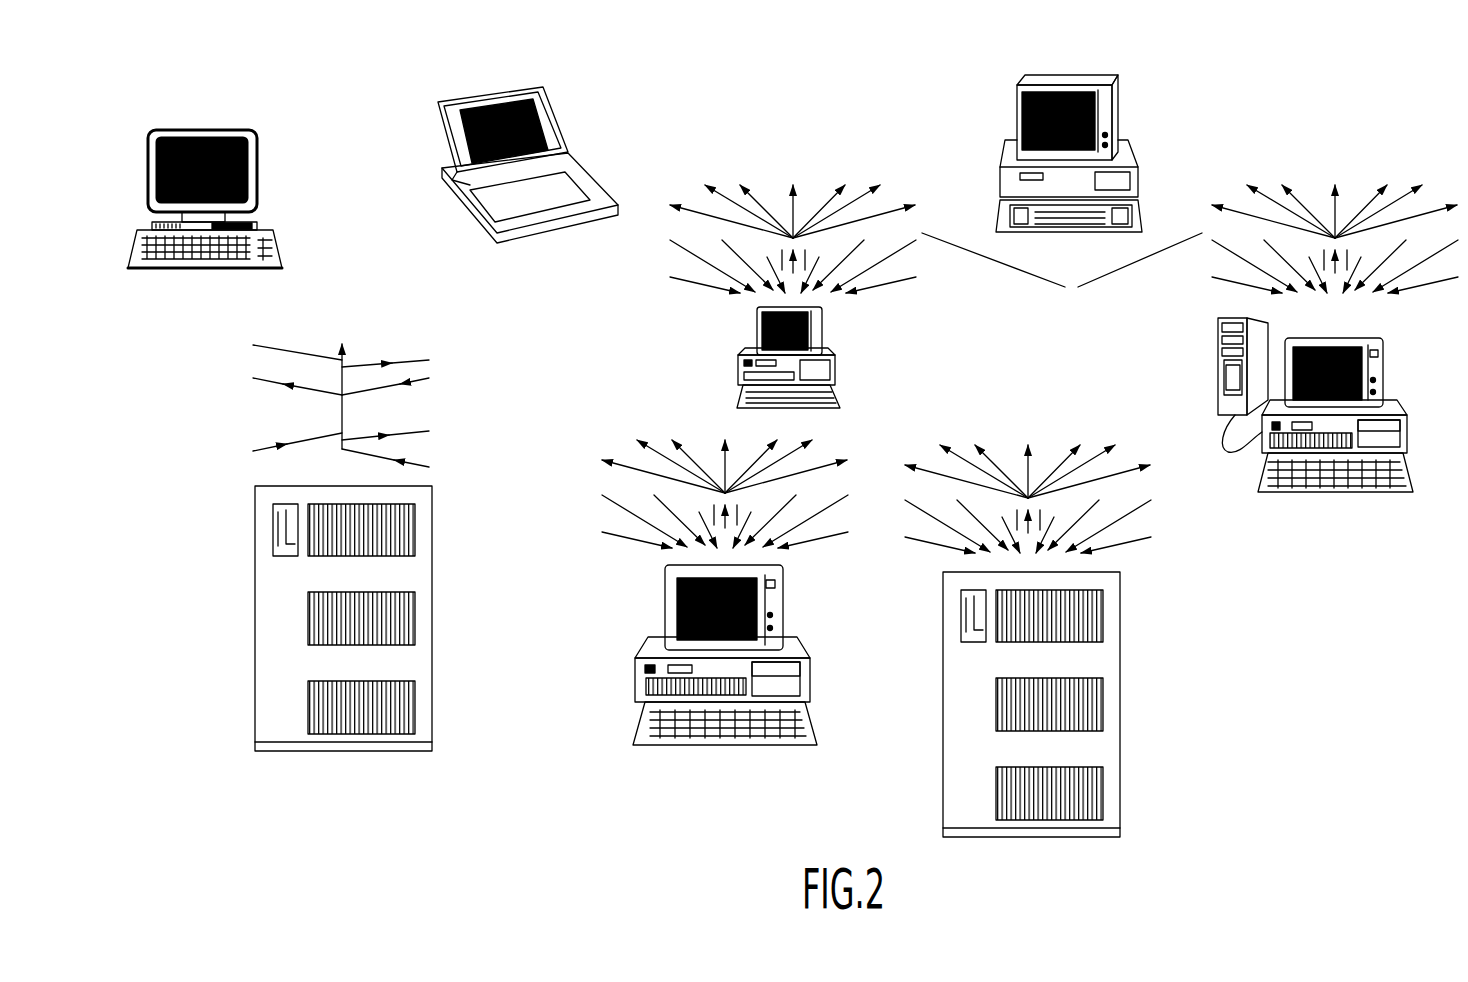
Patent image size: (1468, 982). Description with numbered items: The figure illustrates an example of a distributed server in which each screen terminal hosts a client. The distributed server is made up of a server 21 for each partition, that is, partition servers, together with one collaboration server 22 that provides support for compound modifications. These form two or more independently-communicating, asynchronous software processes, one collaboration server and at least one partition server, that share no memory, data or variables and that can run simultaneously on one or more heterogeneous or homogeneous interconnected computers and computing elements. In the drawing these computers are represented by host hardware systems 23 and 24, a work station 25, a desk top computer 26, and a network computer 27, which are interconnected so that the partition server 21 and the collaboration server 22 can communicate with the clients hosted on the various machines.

The partition server 21 is at (853, 483).
The collaboration server 22 is at (342, 367).
The host hardware system 23 is at (1120, 791).
The host hardware system 24 is at (432, 547).
The work station 25 is at (1223, 370).
The desk top computer 26 is at (835, 365).
The network computer 27 is at (783, 613).